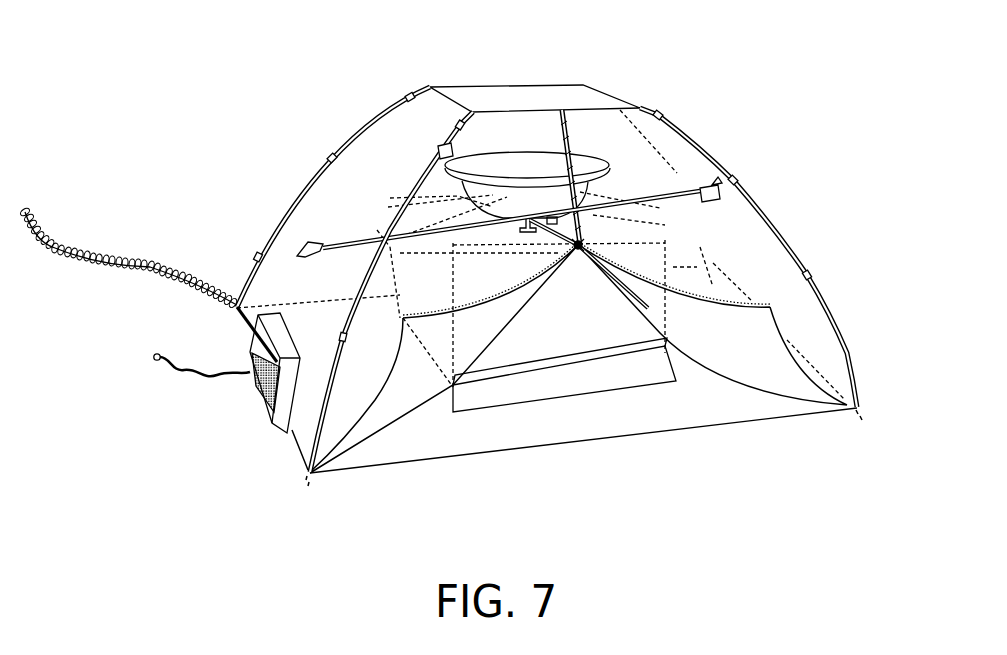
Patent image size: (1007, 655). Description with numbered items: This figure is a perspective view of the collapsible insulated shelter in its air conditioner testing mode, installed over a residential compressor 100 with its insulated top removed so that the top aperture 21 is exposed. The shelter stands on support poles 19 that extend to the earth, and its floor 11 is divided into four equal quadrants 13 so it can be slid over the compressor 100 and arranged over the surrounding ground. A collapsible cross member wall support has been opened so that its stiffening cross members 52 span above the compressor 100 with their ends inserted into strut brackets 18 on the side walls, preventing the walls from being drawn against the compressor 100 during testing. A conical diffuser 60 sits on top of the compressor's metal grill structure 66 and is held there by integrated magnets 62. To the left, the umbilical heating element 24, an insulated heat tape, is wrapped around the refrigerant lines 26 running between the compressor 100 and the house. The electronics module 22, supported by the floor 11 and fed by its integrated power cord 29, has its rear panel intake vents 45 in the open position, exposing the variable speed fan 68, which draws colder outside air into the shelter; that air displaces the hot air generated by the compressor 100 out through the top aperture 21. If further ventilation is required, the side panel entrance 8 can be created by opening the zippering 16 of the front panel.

The side panel entrance 8 is at (553, 118).
The top aperture 21 is at (560, 78).
The strut brackets 18 is at (437, 149).
The support poles 19 is at (347, 142).
The stiffening cross members 52 is at (362, 243).
The conical diffuser 60 is at (585, 163).
The compressor 100 is at (764, 207).
The integrated magnets 62 is at (526, 233).
The metal grill structure 66 is at (478, 252).
The zippering 16 is at (463, 312).
The quadrants 13 is at (527, 437).
The floor 11 is at (618, 440).
The umbilical heating element 24 is at (42, 226).
The refrigerant lines 26 is at (72, 260).
The rear panel intake vents 45 is at (242, 334).
The variable speed fan 68 is at (253, 387).
The integrated power cord 29 is at (176, 378).
The electronics module 22 is at (268, 424).